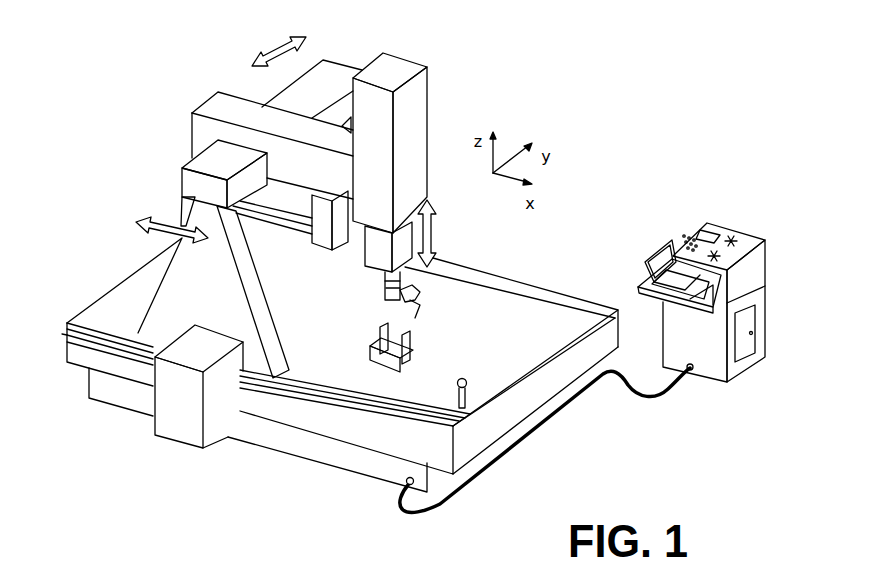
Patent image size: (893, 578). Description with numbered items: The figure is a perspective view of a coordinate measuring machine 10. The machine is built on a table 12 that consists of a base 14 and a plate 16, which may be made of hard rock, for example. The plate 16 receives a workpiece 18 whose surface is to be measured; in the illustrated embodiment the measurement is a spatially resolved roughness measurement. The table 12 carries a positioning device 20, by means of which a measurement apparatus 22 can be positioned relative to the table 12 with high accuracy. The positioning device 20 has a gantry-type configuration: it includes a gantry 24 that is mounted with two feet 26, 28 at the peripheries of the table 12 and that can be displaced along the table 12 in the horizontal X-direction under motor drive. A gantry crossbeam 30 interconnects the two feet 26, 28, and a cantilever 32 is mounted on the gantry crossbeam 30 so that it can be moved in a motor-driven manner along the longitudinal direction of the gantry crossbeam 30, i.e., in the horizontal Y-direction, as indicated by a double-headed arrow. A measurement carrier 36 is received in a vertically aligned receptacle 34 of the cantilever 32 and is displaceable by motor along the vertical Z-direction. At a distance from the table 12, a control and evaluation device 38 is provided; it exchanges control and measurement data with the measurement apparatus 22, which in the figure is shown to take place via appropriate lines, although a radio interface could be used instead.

The coordinate measuring machine 10 is at (621, 120).
The table 12 is at (99, 281).
The base 14 is at (311, 470).
The plate 16 is at (550, 290).
The workpiece 18 is at (413, 347).
The positioning device 20 is at (150, 113).
The measurement apparatus 22 is at (422, 295).
The gantry 24 is at (170, 178).
The foot 26 is at (262, 295).
The foot 28 is at (312, 238).
The gantry crossbeam 30 is at (333, 70).
The cantilever 32 is at (228, 103).
The receptacle 34 is at (423, 88).
The measurement carrier 36 is at (378, 262).
The control and evaluation device 38 is at (763, 228).